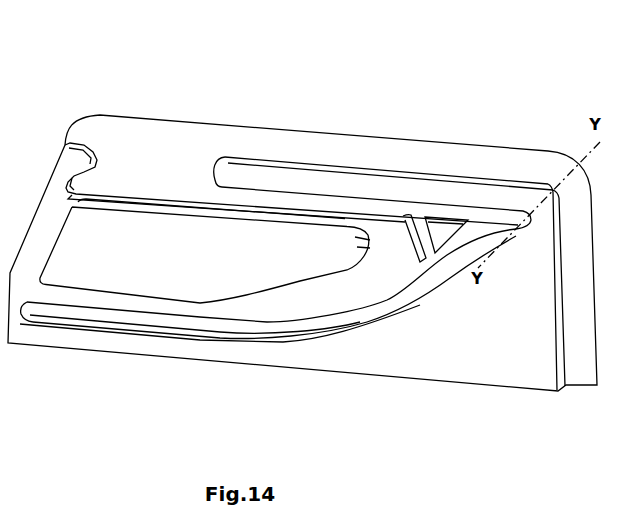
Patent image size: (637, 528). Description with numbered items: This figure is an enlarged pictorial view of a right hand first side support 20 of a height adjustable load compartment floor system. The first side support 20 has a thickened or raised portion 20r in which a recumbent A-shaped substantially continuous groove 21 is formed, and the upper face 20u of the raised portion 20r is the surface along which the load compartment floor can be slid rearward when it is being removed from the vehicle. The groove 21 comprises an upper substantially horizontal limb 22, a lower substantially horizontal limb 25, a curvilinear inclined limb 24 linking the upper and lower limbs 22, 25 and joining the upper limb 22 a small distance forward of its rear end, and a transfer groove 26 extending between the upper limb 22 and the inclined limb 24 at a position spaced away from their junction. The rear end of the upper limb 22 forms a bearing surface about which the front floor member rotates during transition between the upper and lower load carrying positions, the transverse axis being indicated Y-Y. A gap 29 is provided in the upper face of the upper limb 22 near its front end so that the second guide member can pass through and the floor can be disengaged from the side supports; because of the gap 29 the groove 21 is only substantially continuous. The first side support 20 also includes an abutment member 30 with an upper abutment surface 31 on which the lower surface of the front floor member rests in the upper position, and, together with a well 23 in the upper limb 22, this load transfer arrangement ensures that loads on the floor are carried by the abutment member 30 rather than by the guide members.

The first side support 20 is at (497, 147).
The upper face of the raised portion 20u is at (263, 162).
The raised portion 20r is at (562, 386).
The groove 21 is at (450, 196).
The upper limb 22 is at (292, 190).
The well 23 is at (112, 193).
The inclined limb 24 is at (367, 317).
The lower limb 25 is at (92, 322).
The transfer groove 26 is at (414, 230).
The gap 29 is at (218, 170).
The abutment member 30 is at (190, 308).
The abutment surface 31 is at (249, 203).